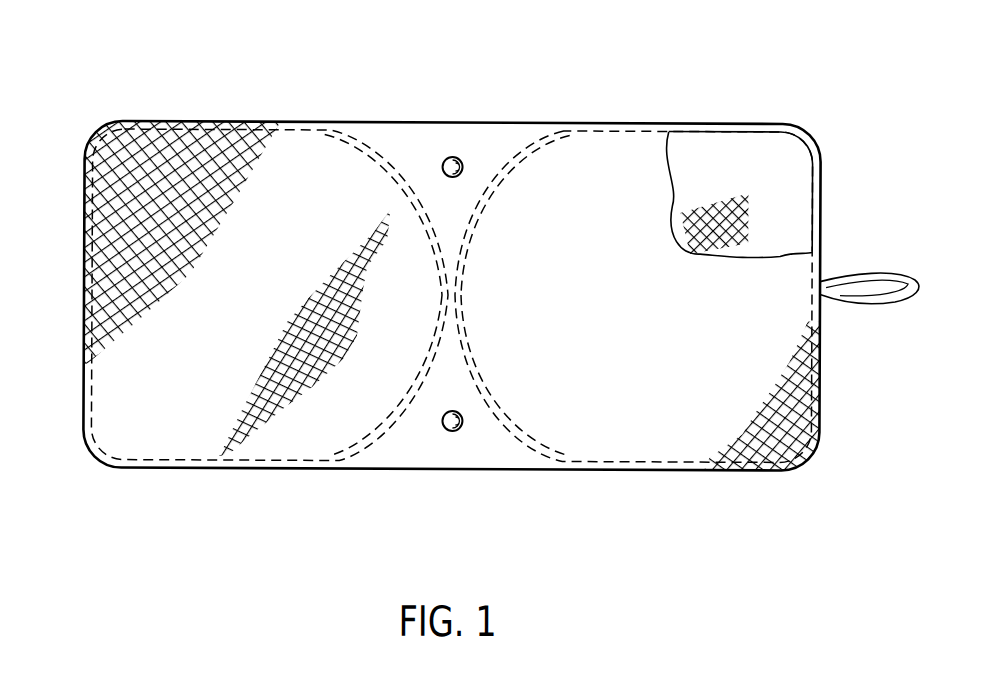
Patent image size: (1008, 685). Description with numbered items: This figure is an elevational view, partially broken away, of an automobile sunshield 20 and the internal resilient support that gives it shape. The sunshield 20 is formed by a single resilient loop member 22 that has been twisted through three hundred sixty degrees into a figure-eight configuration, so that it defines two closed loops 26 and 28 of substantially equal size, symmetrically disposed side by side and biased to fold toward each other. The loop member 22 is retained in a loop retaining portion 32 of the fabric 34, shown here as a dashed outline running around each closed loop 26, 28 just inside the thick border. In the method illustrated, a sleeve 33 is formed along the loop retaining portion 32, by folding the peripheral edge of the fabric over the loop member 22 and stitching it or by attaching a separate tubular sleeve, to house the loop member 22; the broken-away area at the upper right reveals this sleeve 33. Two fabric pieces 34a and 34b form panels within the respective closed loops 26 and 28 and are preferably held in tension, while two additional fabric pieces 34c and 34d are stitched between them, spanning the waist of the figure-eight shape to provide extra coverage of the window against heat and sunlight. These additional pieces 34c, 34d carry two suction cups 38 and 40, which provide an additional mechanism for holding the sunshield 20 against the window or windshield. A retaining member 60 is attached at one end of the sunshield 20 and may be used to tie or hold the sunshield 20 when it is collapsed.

The sunshield 20 is at (146, 92).
The resilient loop member 22 is at (792, 130).
The closed loop 26 is at (183, 428).
The closed loop 28 is at (707, 415).
The loop retaining portion 32 is at (287, 121).
The sleeve 33 is at (668, 132).
The fabric 34 is at (279, 305).
The fabric piece 34a is at (757, 366).
The fabric piece 34b is at (140, 295).
The additional fabric piece 34c is at (405, 145).
The additional fabric piece 34d is at (400, 448).
The suction cup 38 is at (462, 157).
The suction cup 40 is at (463, 434).
The retaining member 60 is at (880, 272).